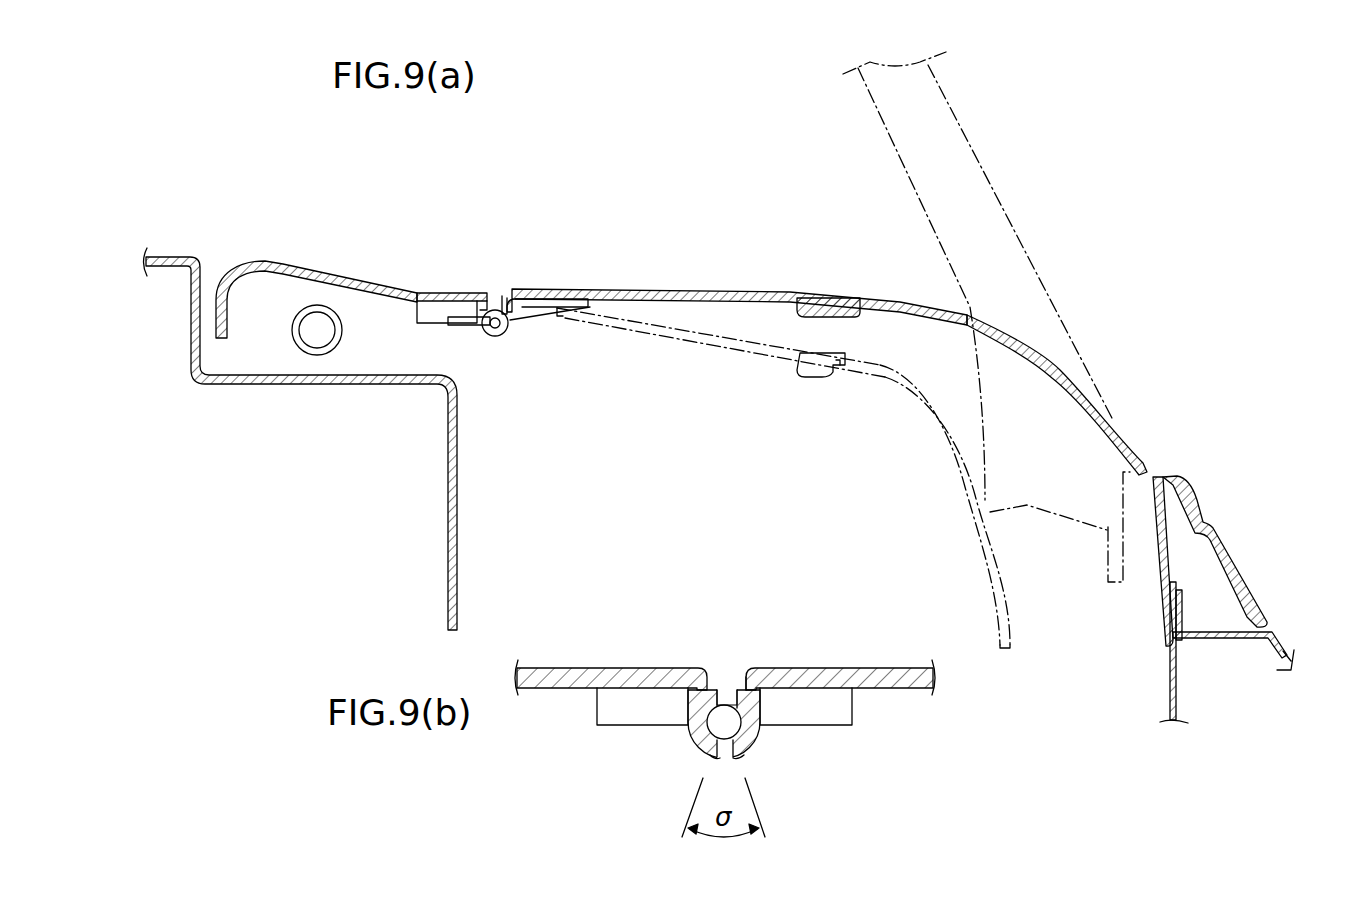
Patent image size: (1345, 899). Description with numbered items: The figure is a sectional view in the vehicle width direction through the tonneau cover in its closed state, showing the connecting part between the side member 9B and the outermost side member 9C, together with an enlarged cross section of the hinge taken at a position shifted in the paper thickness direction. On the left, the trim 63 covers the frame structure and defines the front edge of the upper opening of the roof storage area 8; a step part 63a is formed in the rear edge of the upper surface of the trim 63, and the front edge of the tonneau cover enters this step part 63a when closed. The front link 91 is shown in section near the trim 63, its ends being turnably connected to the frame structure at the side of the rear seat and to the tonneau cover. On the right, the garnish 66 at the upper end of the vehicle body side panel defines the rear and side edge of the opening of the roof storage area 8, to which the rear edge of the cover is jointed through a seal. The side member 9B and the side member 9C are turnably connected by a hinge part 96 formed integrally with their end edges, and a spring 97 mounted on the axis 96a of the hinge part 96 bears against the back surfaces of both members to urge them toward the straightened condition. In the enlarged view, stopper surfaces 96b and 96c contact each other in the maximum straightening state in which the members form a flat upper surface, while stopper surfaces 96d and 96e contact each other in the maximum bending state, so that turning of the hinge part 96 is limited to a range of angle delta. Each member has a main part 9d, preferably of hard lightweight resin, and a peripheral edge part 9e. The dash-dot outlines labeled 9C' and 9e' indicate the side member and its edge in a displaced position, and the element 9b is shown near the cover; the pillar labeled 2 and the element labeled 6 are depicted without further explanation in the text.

In FIG. 9A, the front pillar 2 is at (966, 135).
In FIG. 9A, the vehicle body 6 is at (418, 126).
In FIG. 9A, the roof storage area 8 is at (834, 484).
In FIG. 9A, the side member 9B is at (405, 292).
In FIG. 9B, the side member 9B is at (623, 668).
In FIG. 9A, the side member 9C is at (737, 238).
In FIG. 9B, the side member 9C is at (840, 659).
In FIG. 9A, the outer panel in rotated position 9C' is at (721, 378).
In FIG. 9A, the engaging portion 9b is at (843, 321).
In FIG. 9A, the main part 9d is at (806, 294).
In FIG. 9A, the peripheral edge part 9e is at (1057, 356).
In FIG. 9A, the end portion in rotated position 9e' is at (996, 506).
In FIG. 9A, the trim 63 is at (205, 258).
In FIG. 9A, the step part 63a is at (360, 375).
In FIG. 9A, the garnish 66 is at (1195, 497).
In FIG. 9A, the front link 91 is at (313, 356).
In FIG. 9A, the hinge part 96 is at (506, 287).
In FIG. 9B, the hinge part 96 is at (727, 669).
In FIG. 9A, the axis 96a is at (507, 328).
In FIG. 9B, the axis 96a is at (728, 726).
In FIG. 9B, the stopper surface 96b is at (743, 690).
In FIG. 9B, the stopper surface 96c is at (718, 690).
In FIG. 9B, the stopper surface 96d is at (720, 758).
In FIG. 9B, the stopper surface 96e is at (728, 758).
In FIG. 9A, the spring 97 is at (503, 334).